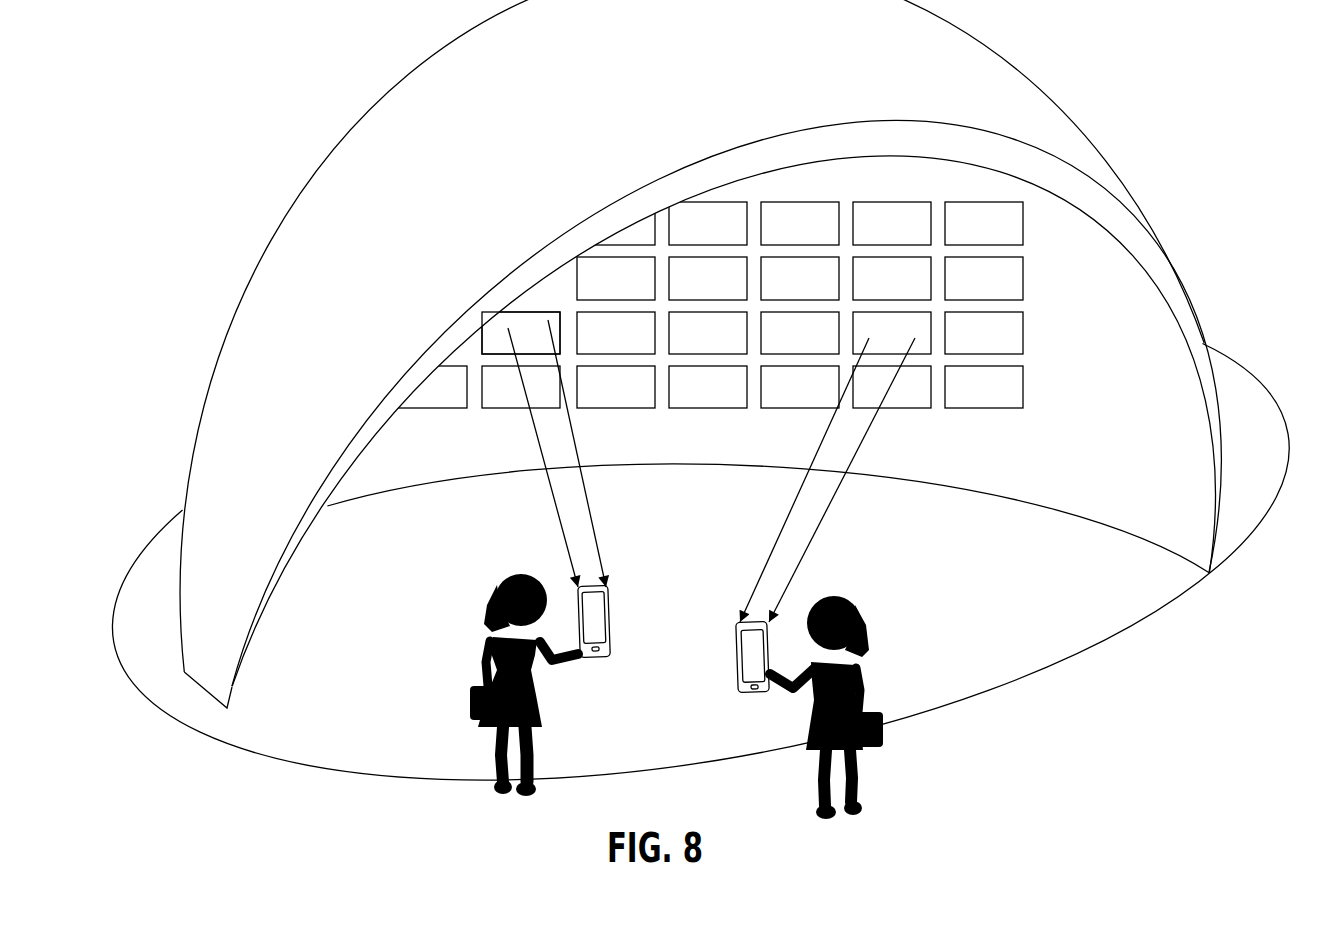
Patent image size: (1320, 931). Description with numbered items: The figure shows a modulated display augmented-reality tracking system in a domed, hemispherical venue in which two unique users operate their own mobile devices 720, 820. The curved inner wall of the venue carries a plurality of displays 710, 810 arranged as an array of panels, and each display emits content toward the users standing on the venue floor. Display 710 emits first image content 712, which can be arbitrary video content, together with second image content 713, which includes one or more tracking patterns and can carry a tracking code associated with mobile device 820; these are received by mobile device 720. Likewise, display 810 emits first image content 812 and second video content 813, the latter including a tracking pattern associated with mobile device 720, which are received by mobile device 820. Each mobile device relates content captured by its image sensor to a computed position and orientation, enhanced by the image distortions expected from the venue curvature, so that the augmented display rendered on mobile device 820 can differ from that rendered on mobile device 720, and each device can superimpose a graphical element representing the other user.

The display 710 is at (930, 328).
The display 810 is at (557, 323).
The first image content 812 is at (552, 492).
The second video content 813 is at (590, 512).
The mobile device 820 is at (610, 593).
The first image content 712 is at (801, 488).
The second image content 713 is at (841, 482).
The mobile device 720 is at (737, 657).